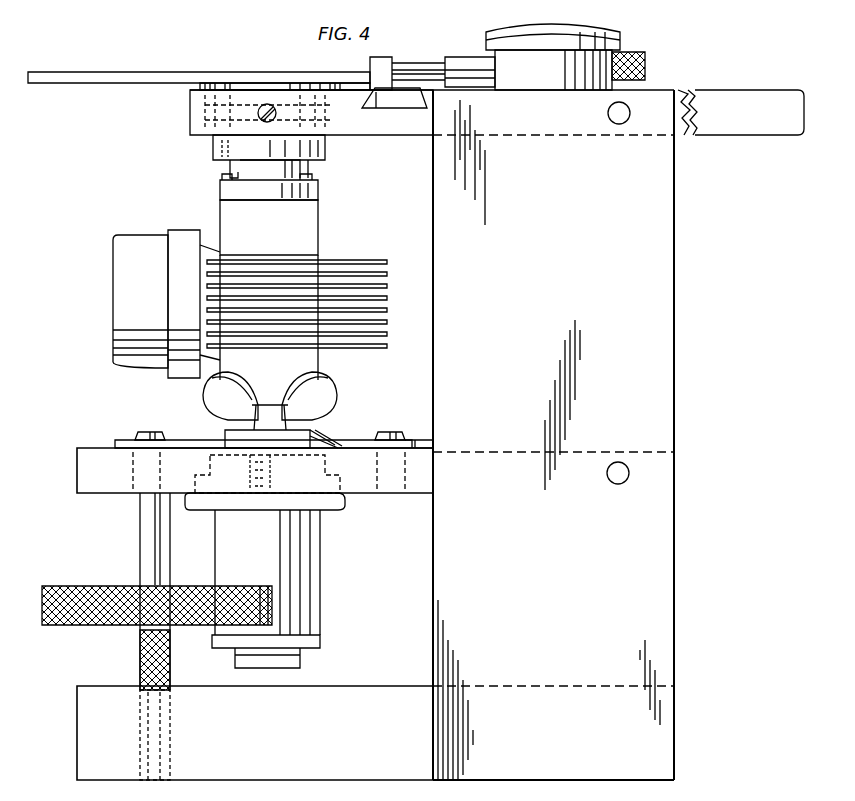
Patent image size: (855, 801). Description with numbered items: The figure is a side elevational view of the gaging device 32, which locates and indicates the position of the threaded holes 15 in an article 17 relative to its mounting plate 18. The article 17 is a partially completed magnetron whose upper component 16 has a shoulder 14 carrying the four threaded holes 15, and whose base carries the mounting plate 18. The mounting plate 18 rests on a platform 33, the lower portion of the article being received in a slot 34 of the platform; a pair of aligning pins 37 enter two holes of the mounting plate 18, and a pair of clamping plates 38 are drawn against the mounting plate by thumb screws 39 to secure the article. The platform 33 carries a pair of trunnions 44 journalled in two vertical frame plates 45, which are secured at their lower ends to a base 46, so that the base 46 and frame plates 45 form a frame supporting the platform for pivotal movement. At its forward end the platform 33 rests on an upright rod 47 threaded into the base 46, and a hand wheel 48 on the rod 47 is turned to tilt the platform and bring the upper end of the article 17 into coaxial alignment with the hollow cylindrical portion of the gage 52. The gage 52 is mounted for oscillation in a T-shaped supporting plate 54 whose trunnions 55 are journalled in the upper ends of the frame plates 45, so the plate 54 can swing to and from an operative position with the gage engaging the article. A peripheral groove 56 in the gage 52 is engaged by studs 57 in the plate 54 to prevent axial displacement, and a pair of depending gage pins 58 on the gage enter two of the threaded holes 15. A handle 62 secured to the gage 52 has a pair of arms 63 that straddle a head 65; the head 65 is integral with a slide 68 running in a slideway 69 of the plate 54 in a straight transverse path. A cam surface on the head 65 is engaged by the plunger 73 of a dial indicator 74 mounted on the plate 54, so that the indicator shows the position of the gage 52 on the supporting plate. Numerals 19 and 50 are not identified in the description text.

The shoulder 14 is at (256, 135).
The threaded holes 15 is at (210, 160).
The upper component 16 is at (230, 178).
The article 17 is at (328, 248).
The mounting plate 18 is at (120, 440).
The knob 19 is at (166, 304).
The gaging device 32 is at (700, 327).
The platform 33 is at (92, 462).
The slot 34 is at (335, 488).
The aligning pins 37 is at (146, 425).
The clamping plates 38 is at (315, 432).
The thumb screws 39 is at (330, 395).
The trunnions 44 is at (618, 478).
The vertical frame plates 45 is at (662, 585).
The base 46 is at (380, 686).
The upright rod 47 is at (140, 532).
The hand wheel 48 is at (76, 586).
The shaft 50 is at (266, 589).
The gage 52 is at (262, 74).
The supporting plate 54 is at (765, 100).
The trunnions 55 is at (618, 118).
The peripheral groove 56 is at (215, 115).
The studs 57 is at (272, 106).
The gage pins 58 is at (212, 145).
The handle 62 is at (118, 83).
The arms 63 is at (362, 78).
The head 65 is at (388, 62).
The slide 68 is at (408, 108).
The slideway 69 is at (378, 108).
The plunger 73 is at (436, 64).
The dial indicator 74 is at (628, 36).